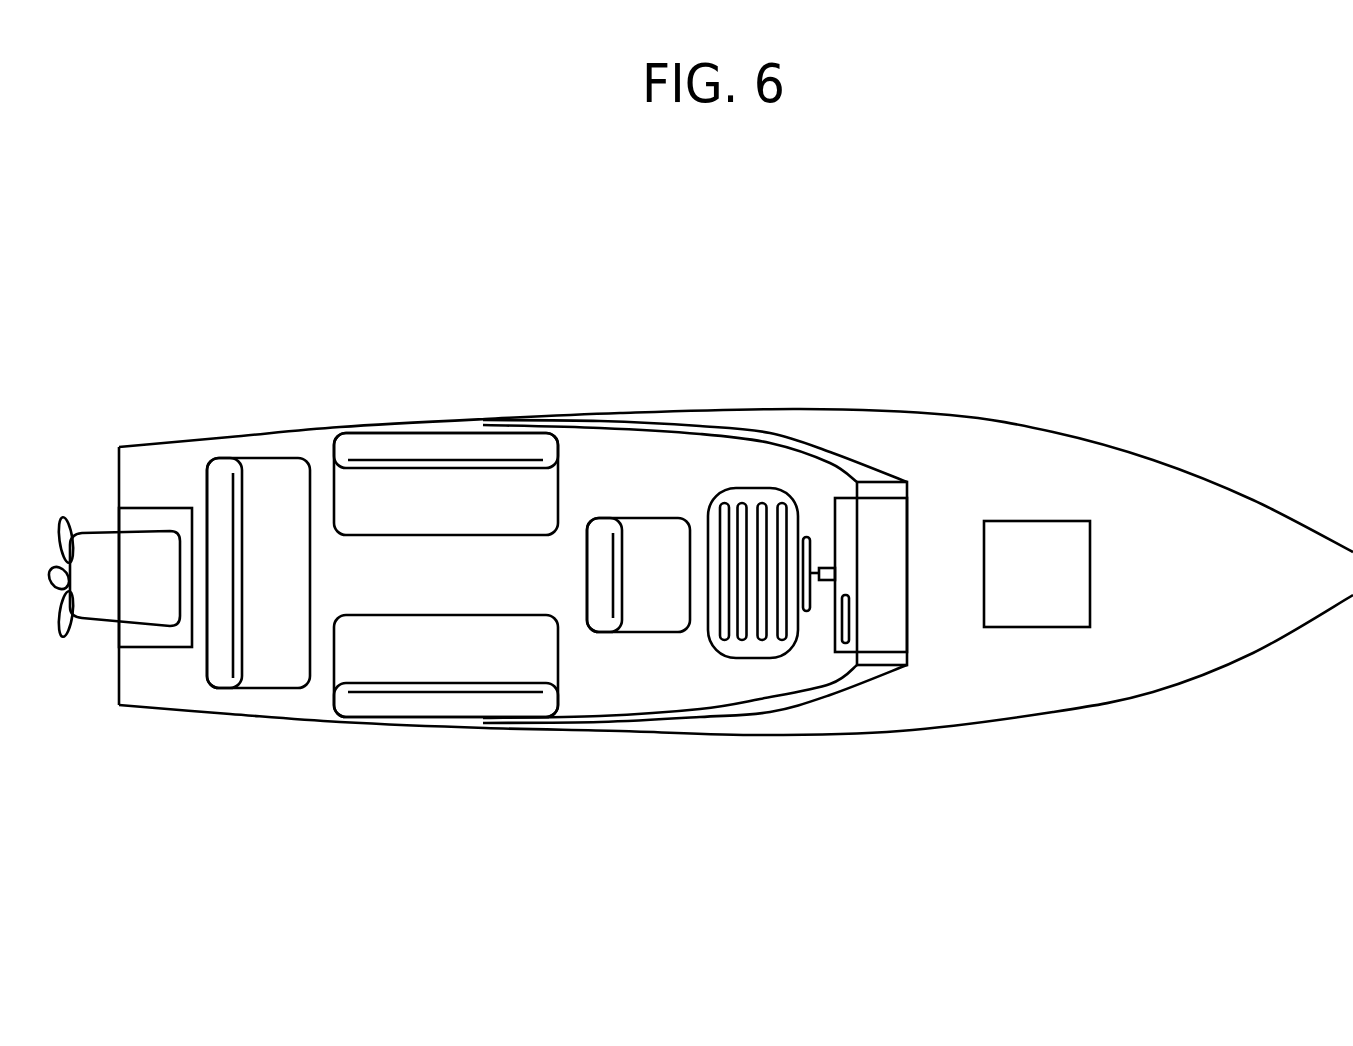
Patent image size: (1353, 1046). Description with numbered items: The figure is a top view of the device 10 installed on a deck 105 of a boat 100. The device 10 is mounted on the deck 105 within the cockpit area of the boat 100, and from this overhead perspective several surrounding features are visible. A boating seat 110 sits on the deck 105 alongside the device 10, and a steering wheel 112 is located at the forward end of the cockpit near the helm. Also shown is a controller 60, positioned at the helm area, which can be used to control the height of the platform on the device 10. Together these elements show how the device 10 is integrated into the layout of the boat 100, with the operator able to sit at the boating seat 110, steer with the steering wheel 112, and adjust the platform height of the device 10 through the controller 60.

The boat 100 is at (127, 396).
The deck 105 is at (645, 680).
The boating seat 110 is at (643, 558).
The device 10 is at (735, 542).
The steering wheel 112 is at (821, 582).
The controller 60 is at (847, 613).